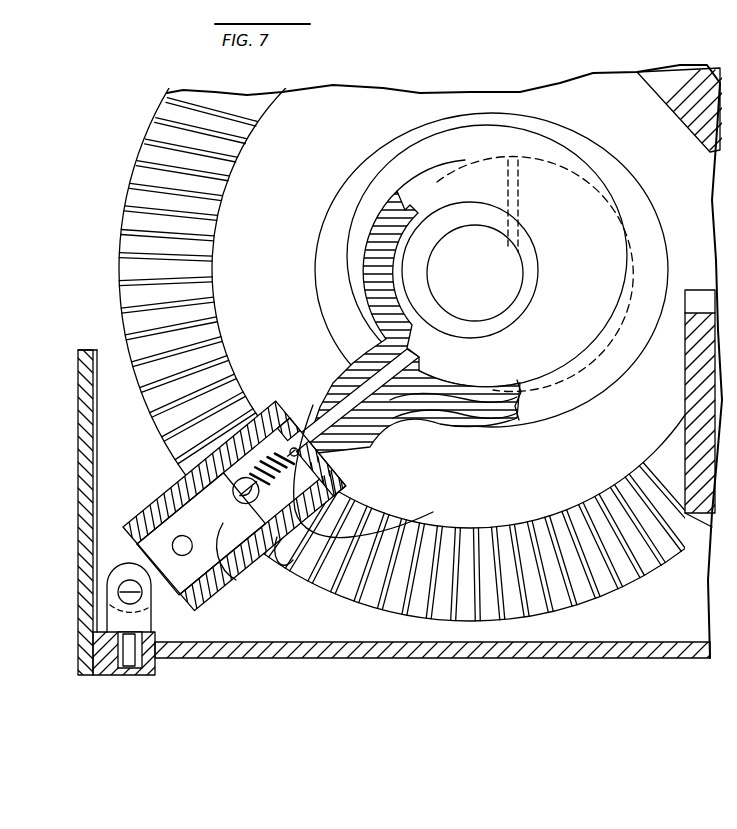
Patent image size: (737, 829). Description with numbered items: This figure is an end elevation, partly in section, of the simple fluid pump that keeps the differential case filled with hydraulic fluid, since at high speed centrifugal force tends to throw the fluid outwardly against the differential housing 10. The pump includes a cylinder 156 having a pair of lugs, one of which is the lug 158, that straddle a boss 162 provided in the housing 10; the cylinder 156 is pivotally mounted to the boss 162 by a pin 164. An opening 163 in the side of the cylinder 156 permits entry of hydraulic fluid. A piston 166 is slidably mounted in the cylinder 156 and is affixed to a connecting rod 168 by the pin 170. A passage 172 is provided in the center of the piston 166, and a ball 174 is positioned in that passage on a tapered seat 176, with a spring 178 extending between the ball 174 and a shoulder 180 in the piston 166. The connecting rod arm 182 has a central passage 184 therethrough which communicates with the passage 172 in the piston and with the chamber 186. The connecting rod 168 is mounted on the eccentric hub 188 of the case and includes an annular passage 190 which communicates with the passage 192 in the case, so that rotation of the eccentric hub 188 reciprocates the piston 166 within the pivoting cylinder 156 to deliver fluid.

The differential housing 10 is at (262, 660).
The cylinder 156 is at (174, 477).
The lug 158 is at (133, 557).
The boss 162 is at (150, 622).
The opening 163 is at (172, 540).
The pin 164 is at (118, 593).
The piston 166 is at (333, 467).
The connecting rod 168 is at (336, 380).
The pin 170 is at (333, 463).
The passage 172 is at (278, 540).
The ball 174 is at (233, 567).
The tapered seat 176 is at (240, 512).
The spring 178 is at (405, 523).
The shoulder 180 is at (296, 448).
The connecting rod arm 182 is at (375, 413).
The central passage 184 is at (333, 407).
The chamber 186 is at (420, 352).
The eccentric hub 188 is at (600, 217).
The annular passage 190 is at (402, 235).
The passage 192 is at (528, 208).